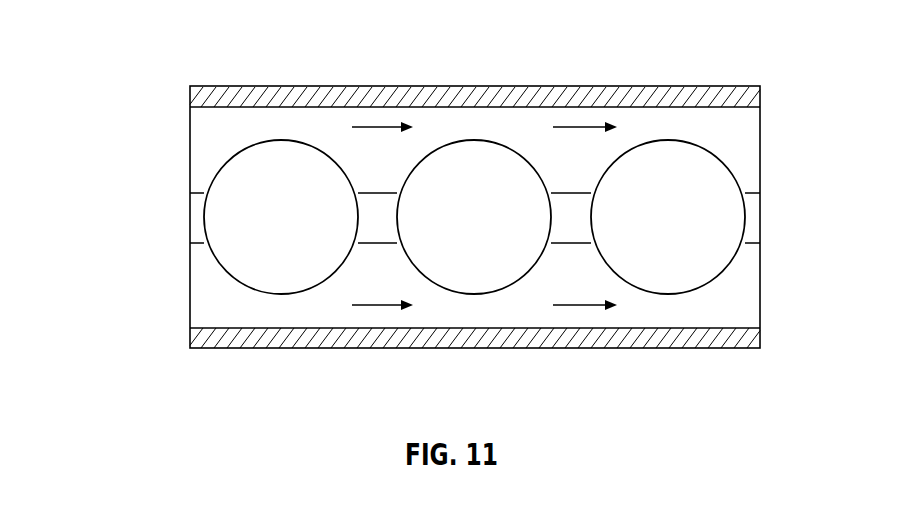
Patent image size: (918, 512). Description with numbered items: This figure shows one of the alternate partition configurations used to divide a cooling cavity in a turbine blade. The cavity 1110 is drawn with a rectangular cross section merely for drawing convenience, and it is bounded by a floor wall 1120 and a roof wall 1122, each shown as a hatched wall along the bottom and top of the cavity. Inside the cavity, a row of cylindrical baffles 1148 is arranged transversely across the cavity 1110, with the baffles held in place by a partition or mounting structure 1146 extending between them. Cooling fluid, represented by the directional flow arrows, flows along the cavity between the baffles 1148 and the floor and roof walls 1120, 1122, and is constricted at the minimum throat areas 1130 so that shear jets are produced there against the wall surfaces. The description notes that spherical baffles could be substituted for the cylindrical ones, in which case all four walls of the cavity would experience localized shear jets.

The ball bearing assembly 1110 is at (128, 152).
The lower wall 1120 is at (713, 333).
The upper wall 1122 is at (738, 93).
The flow channel 1130 is at (282, 312).
The rail 1146 is at (200, 218).
The ball 1148 is at (281, 139).